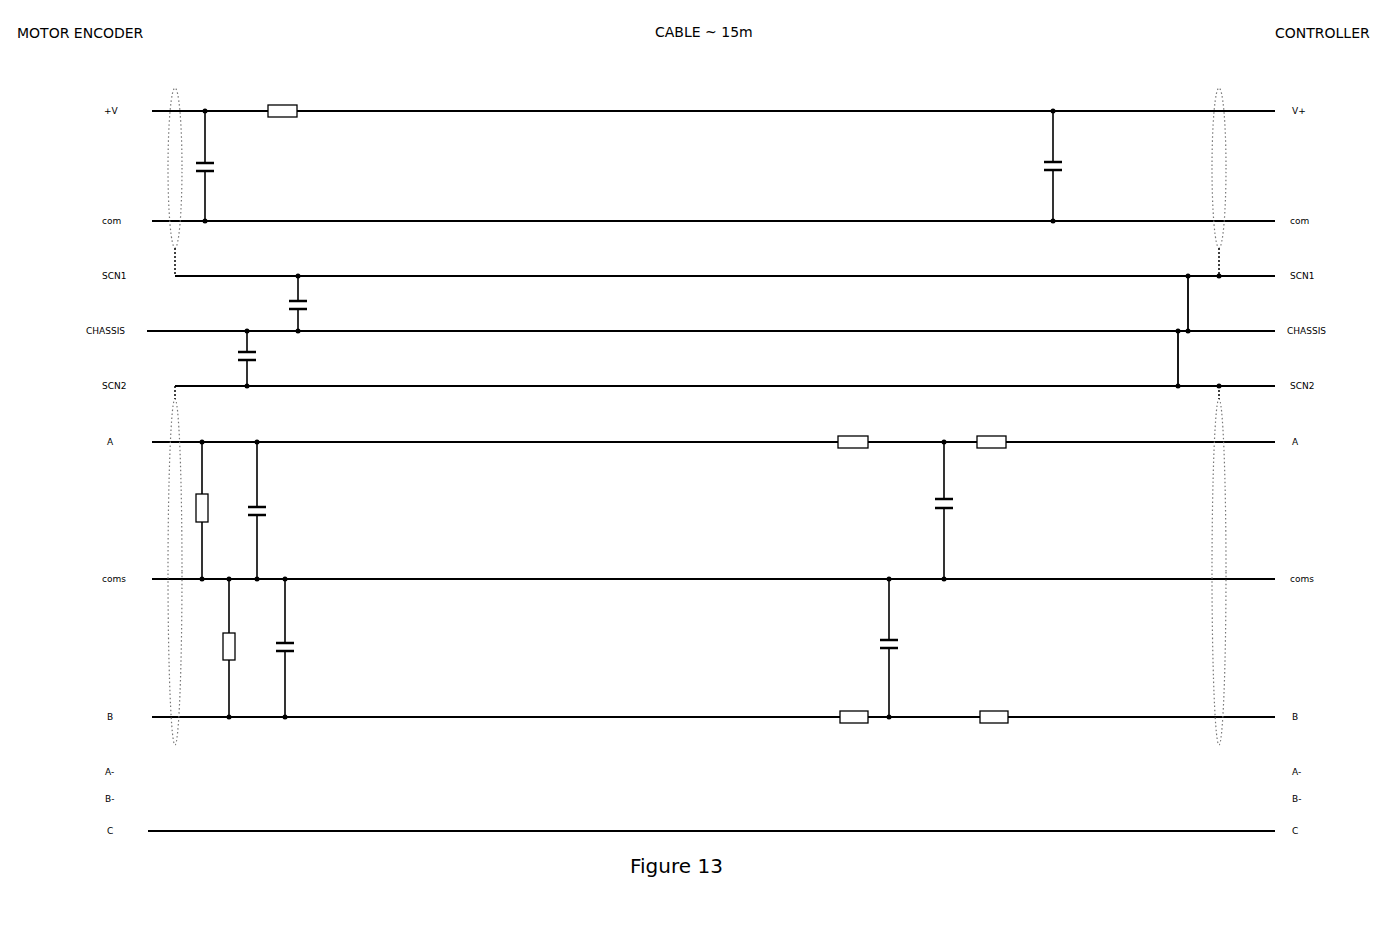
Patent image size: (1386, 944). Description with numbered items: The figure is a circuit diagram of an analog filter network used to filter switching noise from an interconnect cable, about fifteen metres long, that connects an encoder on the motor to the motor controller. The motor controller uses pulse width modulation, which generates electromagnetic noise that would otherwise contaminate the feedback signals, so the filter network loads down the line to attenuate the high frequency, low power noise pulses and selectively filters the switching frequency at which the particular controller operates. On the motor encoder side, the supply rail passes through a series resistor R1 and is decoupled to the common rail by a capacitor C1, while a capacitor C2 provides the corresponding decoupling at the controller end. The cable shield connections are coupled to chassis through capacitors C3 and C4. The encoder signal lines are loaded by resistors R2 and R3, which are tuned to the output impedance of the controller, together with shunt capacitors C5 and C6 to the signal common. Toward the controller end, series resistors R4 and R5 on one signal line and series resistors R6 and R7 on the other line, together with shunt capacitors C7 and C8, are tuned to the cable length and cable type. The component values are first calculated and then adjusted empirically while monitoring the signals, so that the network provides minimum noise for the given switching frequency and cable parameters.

The capacitor 10uF C1 is at (219, 166).
The capacitor 10uF C2 is at (1067, 166).
The capacitor 100nF C3 is at (315, 303).
The capacitor 100nF C4 is at (264, 358).
The capacitor 10nF C5 is at (271, 510).
The capacitor 10nF C6 is at (299, 648).
The capacitor C7 is at (961, 510).
The capacitor C8 is at (906, 648).
The resistor 10 ohm R1 is at (282, 111).
The resistor R2 is at (213, 510).
The resistor R3 is at (240, 648).
The resistor R4 is at (853, 442).
The resistor R5 is at (991, 442).
The resistor R6 is at (854, 717).
The resistor R7 is at (994, 717).